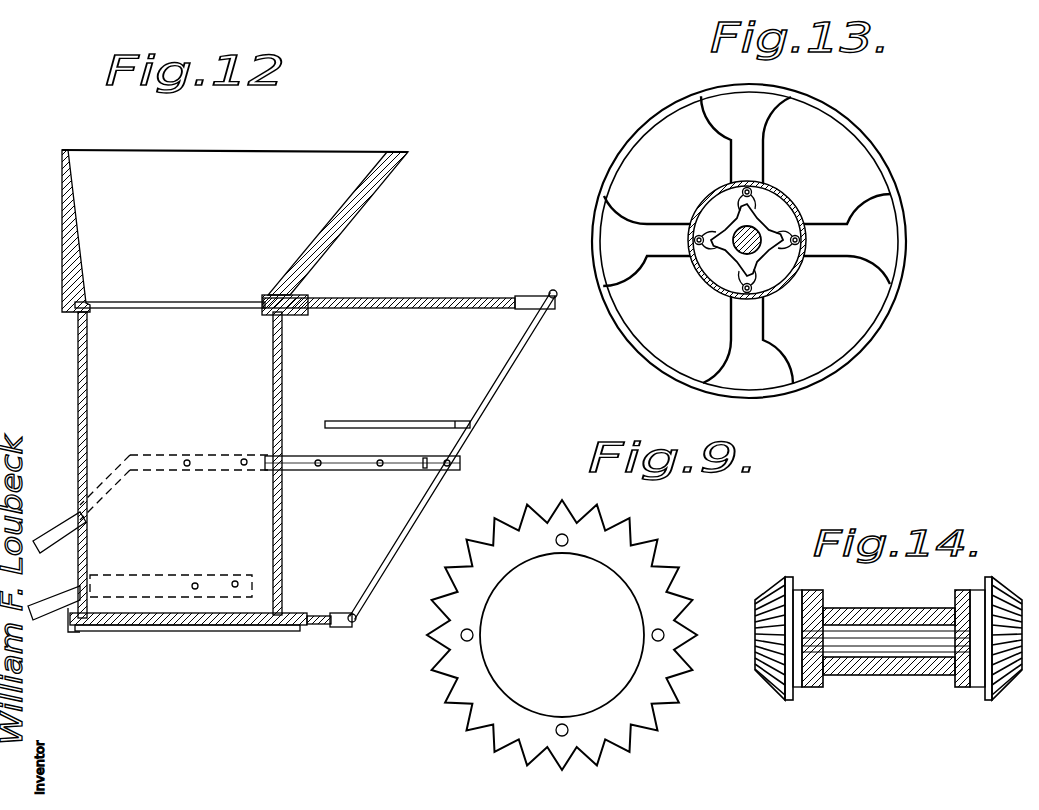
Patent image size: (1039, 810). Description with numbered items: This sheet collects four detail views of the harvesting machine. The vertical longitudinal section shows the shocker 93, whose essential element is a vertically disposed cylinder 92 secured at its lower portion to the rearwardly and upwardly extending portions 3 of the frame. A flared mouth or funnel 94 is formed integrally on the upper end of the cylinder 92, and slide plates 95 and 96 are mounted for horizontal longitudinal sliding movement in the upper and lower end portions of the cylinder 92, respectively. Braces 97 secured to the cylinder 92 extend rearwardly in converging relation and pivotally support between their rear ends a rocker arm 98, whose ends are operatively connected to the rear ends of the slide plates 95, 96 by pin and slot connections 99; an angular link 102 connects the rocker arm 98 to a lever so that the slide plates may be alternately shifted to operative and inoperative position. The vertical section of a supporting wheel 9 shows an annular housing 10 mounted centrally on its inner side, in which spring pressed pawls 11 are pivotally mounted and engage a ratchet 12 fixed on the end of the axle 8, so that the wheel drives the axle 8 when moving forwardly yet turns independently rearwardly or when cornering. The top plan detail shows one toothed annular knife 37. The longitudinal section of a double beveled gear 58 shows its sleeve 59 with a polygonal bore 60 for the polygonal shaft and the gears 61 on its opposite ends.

In FIG. 12, the flared mouth or funnel 94 is at (62, 232).
In FIG. 12, the shocker 93 is at (69, 352).
In FIG. 12, the cylinder 92 is at (78, 402).
In FIG. 12, the slide plate 96 is at (230, 628).
In FIG. 12, the supporting wheel 9 is at (157, 592).
In FIG. 13, the supporting wheel 9 is at (772, 110).
In FIG. 12, the brace 97 is at (57, 528).
In FIG. 12, the portion of the frame 3 is at (42, 622).
In FIG. 12, the slide plate 95 is at (369, 302).
In FIG. 12, the angular link 102 is at (356, 424).
In FIG. 12, the rocker arm 98 is at (500, 380).
In FIG. 12, the pin and slot connection 99 is at (556, 300).
In FIG. 13, the axle 8 is at (702, 236).
In FIG. 13, the annular housing 10 is at (780, 214).
In FIG. 13, the spring pressed pawl 11 is at (737, 200).
In FIG. 13, the ratchet 12 is at (780, 262).
In FIG. 9, the toothed annular knife 37 is at (656, 703).
In FIG. 14, the gear 61 is at (778, 590).
In FIG. 14, the double beveled gear 58 is at (925, 691).
In FIG. 14, the sleeve 59 is at (868, 612).
In FIG. 14, the polygonal bore 60 is at (855, 656).